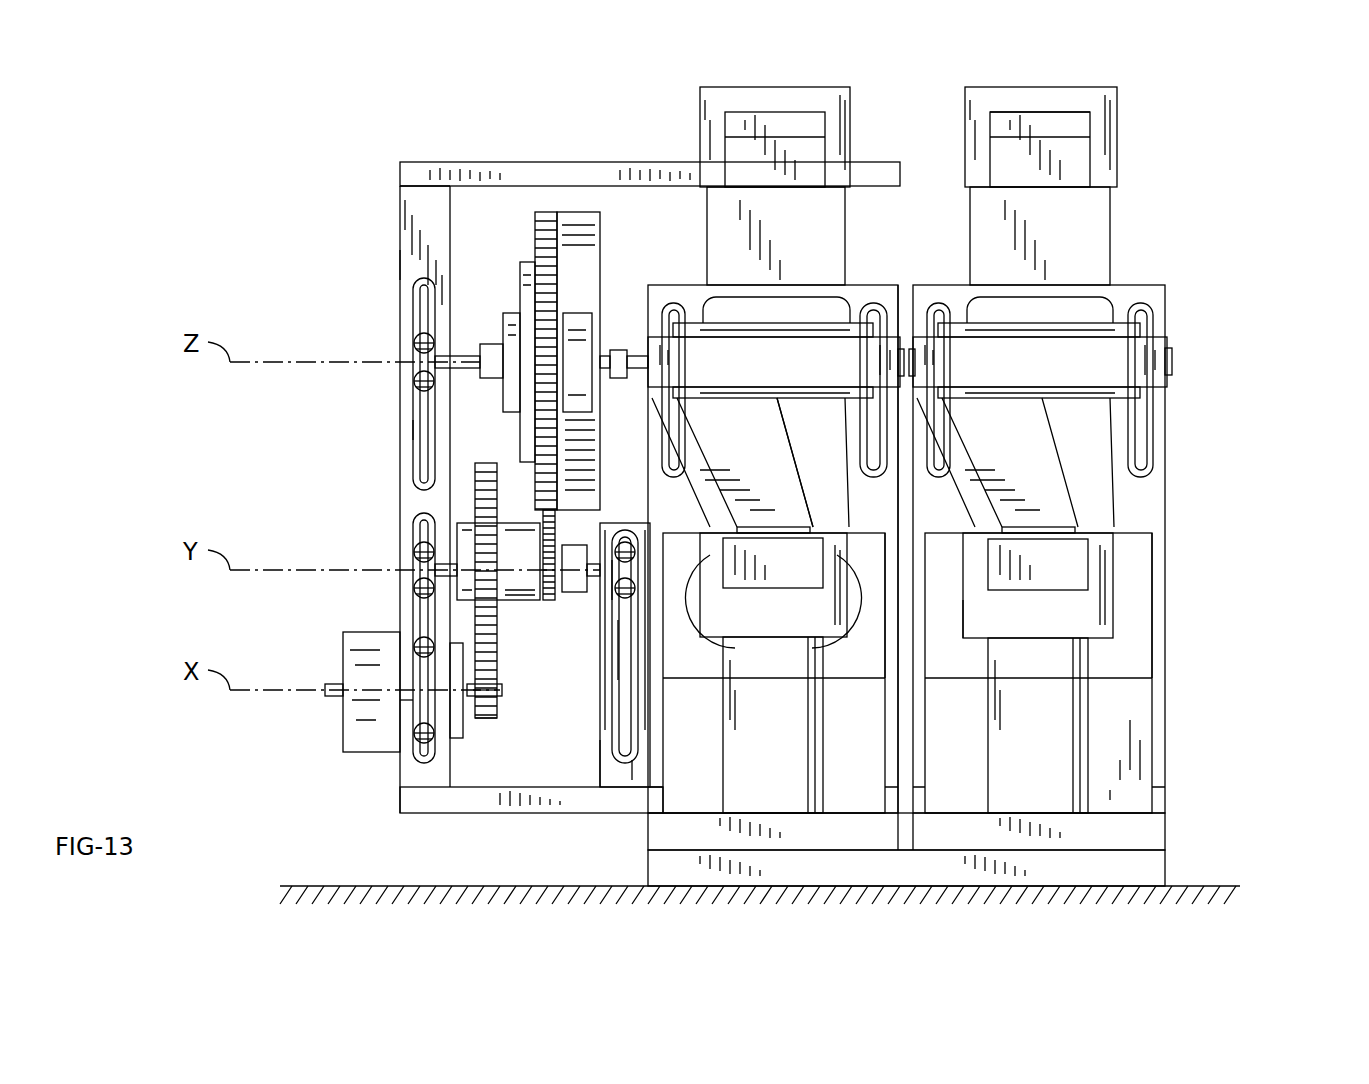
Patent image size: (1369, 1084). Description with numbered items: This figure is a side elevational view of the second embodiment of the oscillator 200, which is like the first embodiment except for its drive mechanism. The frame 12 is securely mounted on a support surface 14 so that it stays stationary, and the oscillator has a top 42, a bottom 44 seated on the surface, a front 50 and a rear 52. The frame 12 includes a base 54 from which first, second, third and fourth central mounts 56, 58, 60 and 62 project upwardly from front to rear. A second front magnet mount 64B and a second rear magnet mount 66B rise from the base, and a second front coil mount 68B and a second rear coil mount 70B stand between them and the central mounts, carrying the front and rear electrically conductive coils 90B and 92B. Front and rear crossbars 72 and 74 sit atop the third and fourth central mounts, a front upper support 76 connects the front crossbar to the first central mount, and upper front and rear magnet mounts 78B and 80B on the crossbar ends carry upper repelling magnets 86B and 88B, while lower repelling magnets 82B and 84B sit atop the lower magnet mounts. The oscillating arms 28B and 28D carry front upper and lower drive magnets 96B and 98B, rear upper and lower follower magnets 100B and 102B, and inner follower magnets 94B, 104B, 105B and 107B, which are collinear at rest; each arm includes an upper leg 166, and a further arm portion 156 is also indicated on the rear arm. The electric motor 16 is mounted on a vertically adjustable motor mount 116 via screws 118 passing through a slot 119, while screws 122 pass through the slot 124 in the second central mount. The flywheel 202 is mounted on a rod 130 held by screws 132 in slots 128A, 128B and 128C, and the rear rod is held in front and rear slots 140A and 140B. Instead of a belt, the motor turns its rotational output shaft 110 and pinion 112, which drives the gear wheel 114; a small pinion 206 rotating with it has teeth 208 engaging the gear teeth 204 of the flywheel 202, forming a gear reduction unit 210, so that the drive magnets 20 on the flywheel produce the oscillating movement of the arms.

The frame 12 is at (430, 818).
The support surface 14 is at (1215, 886).
The electric motor 16 is at (457, 740).
The drive magnets 20 is at (577, 318).
The oscillating arm 28B is at (762, 373).
The oscillating arm 28D is at (1163, 346).
The top 42 is at (650, 79).
The bottom 44 is at (930, 893).
The front 50 is at (347, 207).
The rear 52 is at (1212, 398).
The base 54 is at (658, 835).
The first central mount 56 is at (412, 262).
The second central mount 58 is at (603, 762).
The third central mount 60 is at (860, 500).
The fourth central mount 62 is at (1168, 302).
The second front magnet mount 64B is at (743, 775).
The second rear magnet mount 66B is at (1088, 612).
The second front coil mount 68B is at (698, 797).
The second rear coil mount 70B is at (1125, 722).
The front upper support or crossbar 72 is at (798, 123).
The rear upper support or crossbar 74 is at (1063, 123).
The front upper support 76 is at (423, 167).
The upper front magnet mount 78B is at (852, 102).
The upper rear magnet mount 80B is at (1118, 114).
The lower front repelling magnet 82B is at (803, 572).
The lower rear repelling magnet 84B is at (1077, 563).
The upper front repelling magnet 86B is at (810, 150).
The upper rear repelling magnet 88B is at (1075, 165).
The second front electrically conductive coil 90B is at (833, 647).
The second rear electrically conductive coil 92B is at (1092, 652).
The follower magnet 94B is at (637, 352).
The front upper drive magnet 96B is at (803, 323).
The front lower drive magnet 98B is at (822, 398).
The rear upper follower magnet 100B is at (1062, 300).
The rear lower follower magnet 102B is at (1117, 440).
The follower magnet 104B is at (898, 358).
The follower magnet 105B is at (913, 363).
The follower magnet 107B is at (1173, 362).
The rotational output shaft 110 is at (502, 700).
The pinion 112 is at (495, 720).
The gear wheel 114 is at (473, 507).
The vertically adjustable motor mount 116 is at (395, 712).
The screws 118 is at (415, 650).
The slot 119 is at (420, 725).
The screws 122 is at (415, 550).
The slot 124 is at (625, 705).
The slots 128A is at (432, 298).
The slots 128B is at (673, 310).
The slots 128C is at (873, 310).
The rod 130 is at (430, 430).
The screws 132 is at (420, 340).
The front slots 140A is at (935, 310).
The rear slots 140B is at (1140, 418).
The cross member 156 is at (1090, 352).
The upper leg 166 is at (1060, 492).
The oscillator 200 is at (1202, 214).
The flywheel 202 is at (593, 170).
The gear teeth 204 is at (527, 170).
The pinion 206 is at (500, 690).
The teeth 208 is at (558, 600).
The gear reduction unit 210 is at (462, 470).